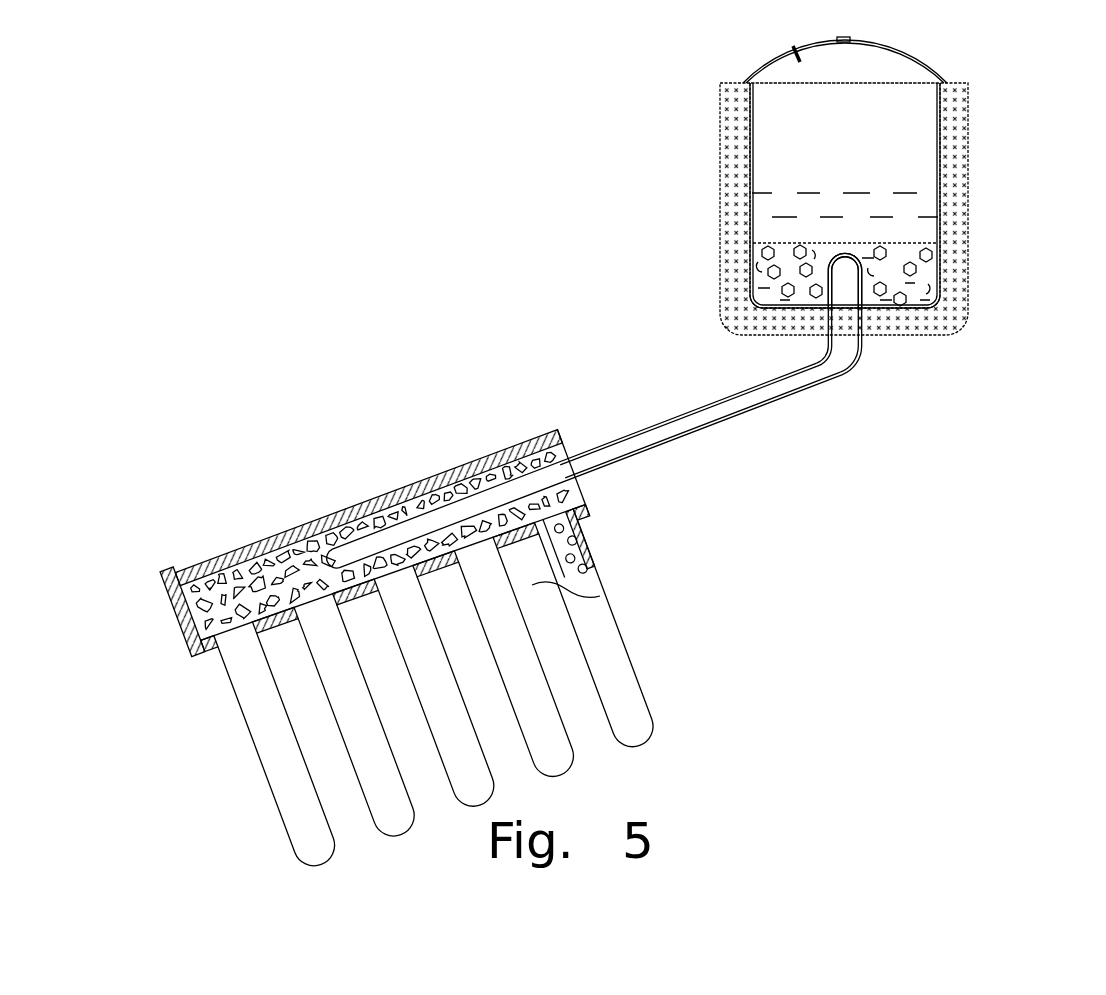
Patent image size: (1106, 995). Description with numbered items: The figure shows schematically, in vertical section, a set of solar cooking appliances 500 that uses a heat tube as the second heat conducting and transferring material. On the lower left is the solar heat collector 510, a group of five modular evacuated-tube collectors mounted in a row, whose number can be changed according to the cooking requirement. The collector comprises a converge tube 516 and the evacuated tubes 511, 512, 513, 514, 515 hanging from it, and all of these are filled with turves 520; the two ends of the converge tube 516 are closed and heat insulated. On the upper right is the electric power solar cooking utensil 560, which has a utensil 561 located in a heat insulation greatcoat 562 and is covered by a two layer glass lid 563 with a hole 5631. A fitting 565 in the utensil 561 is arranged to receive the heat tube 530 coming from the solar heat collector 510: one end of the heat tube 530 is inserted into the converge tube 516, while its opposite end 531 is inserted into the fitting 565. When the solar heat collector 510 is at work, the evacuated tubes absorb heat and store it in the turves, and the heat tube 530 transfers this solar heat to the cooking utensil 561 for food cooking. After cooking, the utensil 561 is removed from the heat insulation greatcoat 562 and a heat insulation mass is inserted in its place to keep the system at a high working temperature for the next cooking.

The solar cooking appliances 500 is at (453, 297).
The solar heat collector 510 is at (263, 518).
The evacuated tube 511 is at (599, 635).
The evacuated tube 512 is at (519, 665).
The evacuated tube 513 is at (438, 694).
The evacuated tube 514 is at (359, 723).
The evacuated tube 515 is at (279, 752).
The converge tube 516 is at (380, 543).
The turves 520 is at (569, 543).
The heat tube 530 is at (677, 410).
The opposite end of heat tube 531 is at (863, 281).
The storage tank assembly 560 is at (1010, 93).
The utensil 561 is at (943, 193).
The heat insulation greatcoat 562 is at (970, 226).
The two layer glass lid 563 is at (913, 52).
The hole 5631 is at (798, 63).
The fitting 565 is at (850, 250).